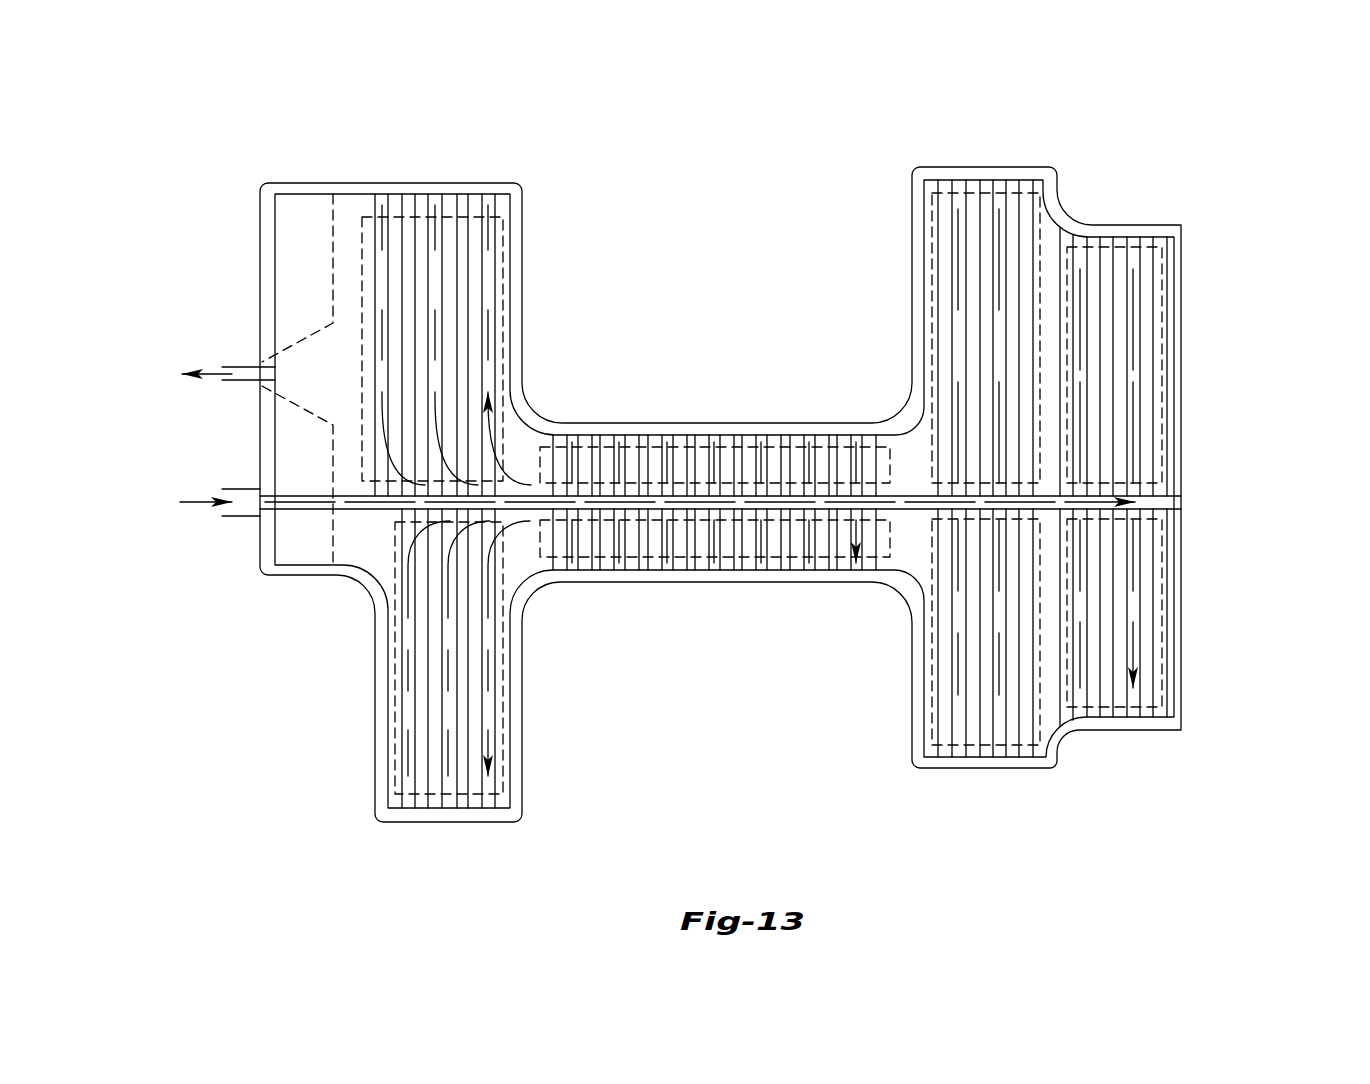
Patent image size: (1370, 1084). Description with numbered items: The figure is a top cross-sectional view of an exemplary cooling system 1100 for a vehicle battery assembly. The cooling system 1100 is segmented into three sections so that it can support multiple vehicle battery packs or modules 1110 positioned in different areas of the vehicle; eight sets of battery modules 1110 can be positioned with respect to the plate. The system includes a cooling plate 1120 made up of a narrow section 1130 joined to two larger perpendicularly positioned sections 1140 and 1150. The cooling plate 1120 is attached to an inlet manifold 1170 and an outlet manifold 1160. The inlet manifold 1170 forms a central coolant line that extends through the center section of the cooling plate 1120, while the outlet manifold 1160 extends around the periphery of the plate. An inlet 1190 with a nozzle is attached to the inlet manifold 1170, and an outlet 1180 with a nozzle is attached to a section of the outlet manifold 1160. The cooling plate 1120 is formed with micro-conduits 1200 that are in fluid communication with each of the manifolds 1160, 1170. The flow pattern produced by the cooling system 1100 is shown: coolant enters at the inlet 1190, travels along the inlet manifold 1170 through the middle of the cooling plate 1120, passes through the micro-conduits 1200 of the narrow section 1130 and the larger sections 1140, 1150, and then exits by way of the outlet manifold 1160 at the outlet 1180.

The cooling system 1100 is at (1258, 155).
The vehicle battery packs 1110 is at (362, 218).
The cooling plate 1120 is at (517, 563).
The narrow section 1130 is at (743, 604).
The larger perpendicularly positioned section 1140 is at (937, 133).
The larger perpendicularly positioned section 1150 is at (423, 153).
The outlet manifold 1160 is at (272, 183).
The inlet manifold 1170 is at (912, 528).
The outlet 1180 is at (240, 365).
The inlet 1190 is at (230, 517).
The micro-conduits 1200 is at (465, 812).